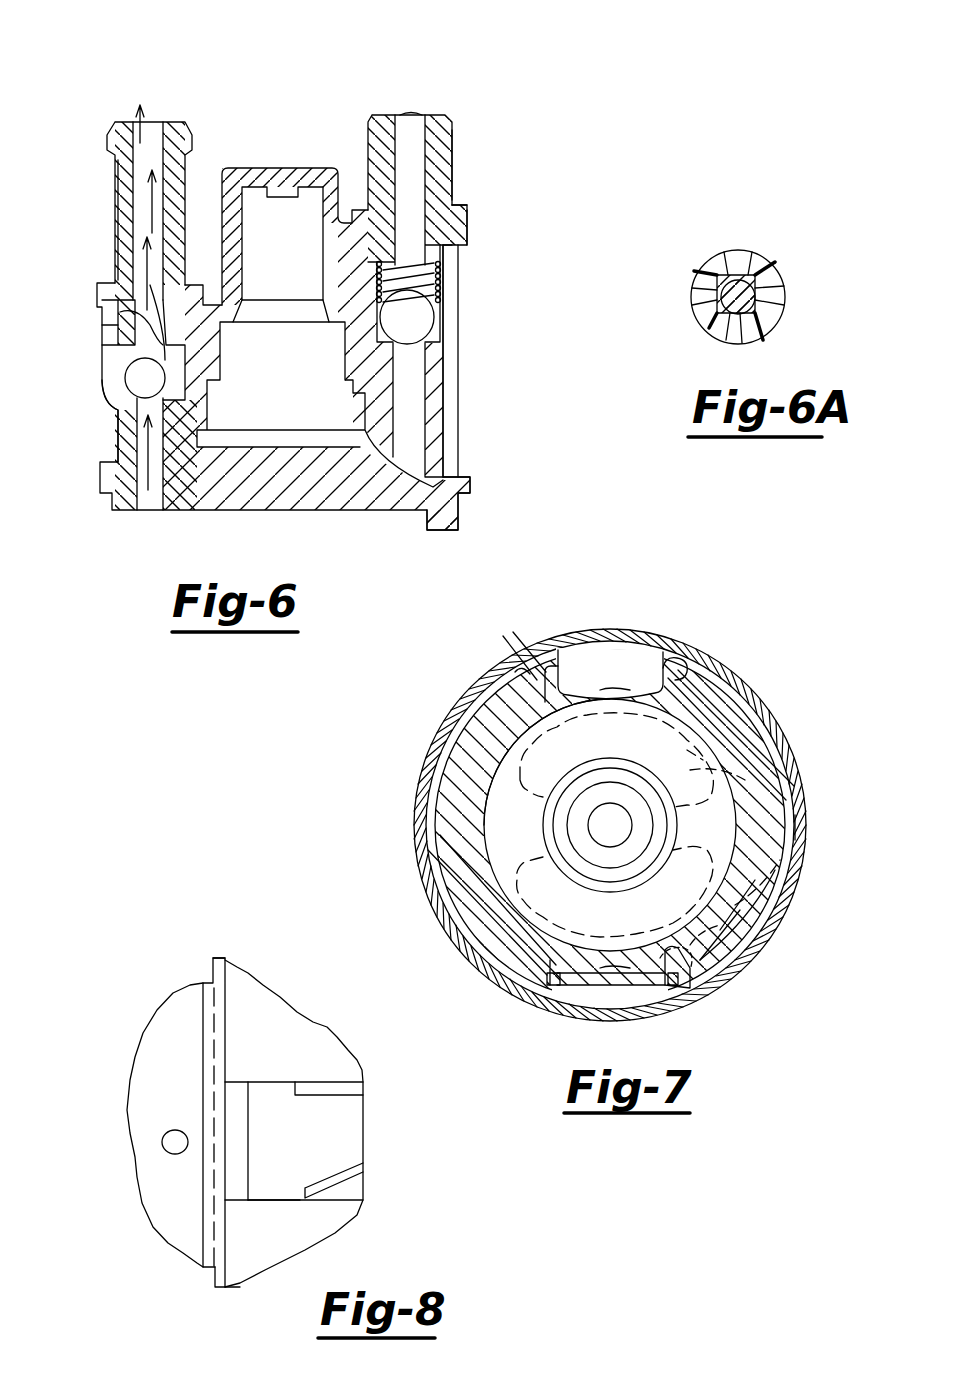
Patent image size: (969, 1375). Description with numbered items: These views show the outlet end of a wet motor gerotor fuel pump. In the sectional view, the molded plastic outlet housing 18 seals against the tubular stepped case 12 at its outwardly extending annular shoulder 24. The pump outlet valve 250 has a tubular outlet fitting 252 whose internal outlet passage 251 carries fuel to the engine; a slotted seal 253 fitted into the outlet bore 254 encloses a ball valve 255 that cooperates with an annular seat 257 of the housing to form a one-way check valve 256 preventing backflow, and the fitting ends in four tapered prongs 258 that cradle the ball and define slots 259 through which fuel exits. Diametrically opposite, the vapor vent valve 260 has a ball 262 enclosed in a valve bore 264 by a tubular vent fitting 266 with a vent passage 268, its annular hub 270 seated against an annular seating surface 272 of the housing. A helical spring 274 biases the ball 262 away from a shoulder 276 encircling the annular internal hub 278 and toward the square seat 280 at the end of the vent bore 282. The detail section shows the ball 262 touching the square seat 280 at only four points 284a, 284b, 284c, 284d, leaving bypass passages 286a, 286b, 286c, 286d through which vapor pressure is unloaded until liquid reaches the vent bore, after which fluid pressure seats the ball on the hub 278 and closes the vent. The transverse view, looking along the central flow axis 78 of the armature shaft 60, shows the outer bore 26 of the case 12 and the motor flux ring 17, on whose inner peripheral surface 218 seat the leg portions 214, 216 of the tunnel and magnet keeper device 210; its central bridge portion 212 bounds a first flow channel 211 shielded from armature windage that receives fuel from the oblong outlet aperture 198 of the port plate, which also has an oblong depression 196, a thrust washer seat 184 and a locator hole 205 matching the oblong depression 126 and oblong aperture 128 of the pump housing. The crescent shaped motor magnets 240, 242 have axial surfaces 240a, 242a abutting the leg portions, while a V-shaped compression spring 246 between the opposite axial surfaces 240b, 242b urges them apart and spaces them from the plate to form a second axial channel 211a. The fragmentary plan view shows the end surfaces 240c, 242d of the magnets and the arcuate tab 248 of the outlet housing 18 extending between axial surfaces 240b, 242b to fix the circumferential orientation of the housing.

In FIG. 6, the outlet housing 18 is at (232, 95).
In FIG. 8, the outlet housing 18 is at (125, 1170).
In FIG. 6, the annular shoulder 24 is at (480, 482).
In FIG. 8, the annular shoulder 24 is at (163, 1228).
In FIG. 6, the pump outlet valve 250 is at (104, 160).
In FIG. 6, the tubular outlet port or fitting 252 is at (118, 186).
In FIG. 6, the internal outlet passage 251 is at (135, 210).
In FIG. 6, the slots 259 is at (150, 278).
In FIG. 6, the slotted seal 253 is at (102, 300).
In FIG. 6, the outlet bore 254 is at (124, 332).
In FIG. 6, the ball valve 255 is at (136, 372).
In FIG. 6, the one-way check valve 256 is at (100, 400).
In FIG. 6, the annular seat 257 is at (138, 410).
In FIG. 6, the tapered prongs 258 is at (172, 400).
In FIG. 6, the vapor vent valve 260 is at (465, 140).
In FIG. 6, the vent passage 268 is at (405, 118).
In FIG. 6, the tubular vent fitting 266 is at (452, 162).
In FIG. 6, the annular hub 270 is at (456, 200).
In FIG. 6, the annular seating surface 272 is at (466, 222).
In FIG. 6, the shoulder 276 is at (460, 258).
In FIG. 6, the helical spring 274 is at (455, 285).
In FIG. 6, the annular internal hub 278 is at (478, 296).
In FIG. 6, the ball 262 is at (432, 312).
In FIG. 6A, the ball 262 is at (765, 296).
In FIG. 6, the valve bore 264 is at (465, 340).
In FIG. 6, the vent bore 282 is at (430, 413).
In FIG. 6A, the square seat 280 is at (722, 262).
In FIG. 6A, the contact point 284a is at (772, 310).
In FIG. 6A, the contact point 284b is at (728, 345).
In FIG. 6A, the contact point 284c is at (710, 300).
In FIG. 6A, the contact point 284d is at (740, 282).
In FIG. 6A, the bypass passage 286a is at (770, 325).
In FIG. 6A, the bypass passage 286b is at (705, 322).
In FIG. 6A, the bypass passage 286c is at (700, 276).
In FIG. 6A, the bypass passage 286d is at (780, 286).
In FIG. 7, the tubular stepped case 12 is at (812, 826).
In FIG. 7, the motor flux ring 17 is at (798, 850).
In FIG. 7, the outer bore 26 is at (468, 728).
In FIG. 7, the armature shaft 60 is at (613, 815).
In FIG. 7, the central flow axis 78 is at (610, 830).
In FIG. 7, the oblong depression 126 is at (788, 754).
In FIG. 7, the oblong aperture 128 is at (758, 918).
In FIG. 7, the thrust washer seat 184 is at (585, 797).
In FIG. 7, the oblong depression 196 is at (728, 962).
In FIG. 7, the outlet aperture 198 is at (775, 724).
In FIG. 7, the hole 205 is at (688, 998).
In FIG. 7, the tunnel and magnet keeper device 210 is at (625, 668).
In FIG. 7, the first flow channel 211 is at (610, 684).
In FIG. 7, the second axial channel 211a is at (645, 962).
In FIG. 7, the central bridge portion 212 is at (668, 668).
In FIG. 7, the leg portion 214 is at (742, 694).
In FIG. 7, the leg portion 216 is at (520, 680).
In FIG. 7, the inner peripheral surface 218 is at (768, 800).
In FIG. 7, the crescent shaped motor magnet 240 is at (755, 892).
In FIG. 7, the axial surface 240a is at (690, 667).
In FIG. 7, the axial surface 240b is at (600, 1005).
In FIG. 8, the axial surface 240b is at (270, 1085).
In FIG. 8, the end surface 240c is at (212, 968).
In FIG. 7, the crescent shaped motor magnet 242 is at (456, 830).
In FIG. 7, the axial surface 242a is at (555, 688).
In FIG. 7, the axial surface 242b is at (548, 985).
In FIG. 8, the axial surface 242b is at (270, 1200).
In FIG. 8, the end surface 242d is at (213, 1270).
In FIG. 7, the V-shaped compression spring 246 is at (605, 990).
In FIG. 8, the V-shaped compression spring 246 is at (358, 1175).
In FIG. 8, the arcuate tab 248 is at (220, 1170).